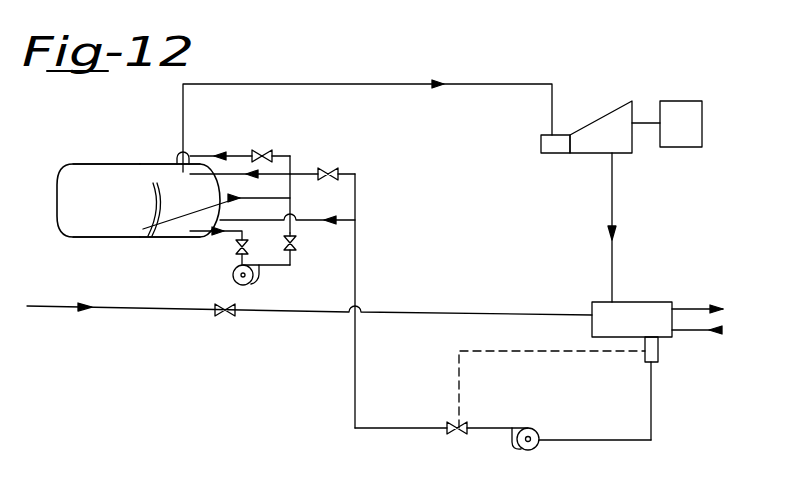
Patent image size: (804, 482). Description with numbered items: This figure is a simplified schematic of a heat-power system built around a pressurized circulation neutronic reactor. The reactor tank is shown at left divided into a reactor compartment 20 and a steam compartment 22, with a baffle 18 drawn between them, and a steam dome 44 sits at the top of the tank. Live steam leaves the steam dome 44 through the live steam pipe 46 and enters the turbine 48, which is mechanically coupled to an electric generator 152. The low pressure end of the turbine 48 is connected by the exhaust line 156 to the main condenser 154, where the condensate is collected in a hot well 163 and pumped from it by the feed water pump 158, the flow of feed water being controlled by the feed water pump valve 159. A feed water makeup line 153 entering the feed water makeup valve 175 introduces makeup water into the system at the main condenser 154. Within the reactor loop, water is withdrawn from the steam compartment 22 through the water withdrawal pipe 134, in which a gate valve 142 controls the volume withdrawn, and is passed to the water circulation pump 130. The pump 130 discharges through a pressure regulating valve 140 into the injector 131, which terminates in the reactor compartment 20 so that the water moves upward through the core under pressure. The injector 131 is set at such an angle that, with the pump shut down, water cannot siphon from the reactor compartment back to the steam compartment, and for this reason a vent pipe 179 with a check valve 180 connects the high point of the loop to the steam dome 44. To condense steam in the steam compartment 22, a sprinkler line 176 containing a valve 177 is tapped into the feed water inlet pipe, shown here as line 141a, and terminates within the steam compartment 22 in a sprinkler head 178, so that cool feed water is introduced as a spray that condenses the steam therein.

The baffle plate 18 is at (153, 206).
The reactor compartment 20 is at (117, 222).
The steam compartment 22 is at (185, 222).
The steam dome 44 is at (176, 158).
The live steam pipe 46 is at (358, 84).
The turbine 48 is at (600, 118).
The water circulation pump 130 is at (253, 282).
The injector 131 is at (210, 214).
The water withdrawal pipe 134 is at (236, 240).
The pressure regulating valve 140 is at (296, 252).
The return line 141a is at (236, 219).
The gate valve 142 is at (235, 257).
The electric generator 152 is at (700, 120).
The feed water makeup line 153 is at (160, 311).
The main condenser 154 is at (650, 302).
The exhaust line 156 is at (613, 200).
The feed water pump 158 is at (517, 438).
The feed water pump valve 159 is at (442, 433).
The hot well 163 is at (660, 350).
The feed water makeup valve 175 is at (212, 314).
The sprinkler line 176 is at (355, 200).
The valve 177 is at (337, 172).
The sprinkler head 178 is at (206, 178).
The vent pipe 179 is at (293, 162).
The check valve 180 is at (258, 153).